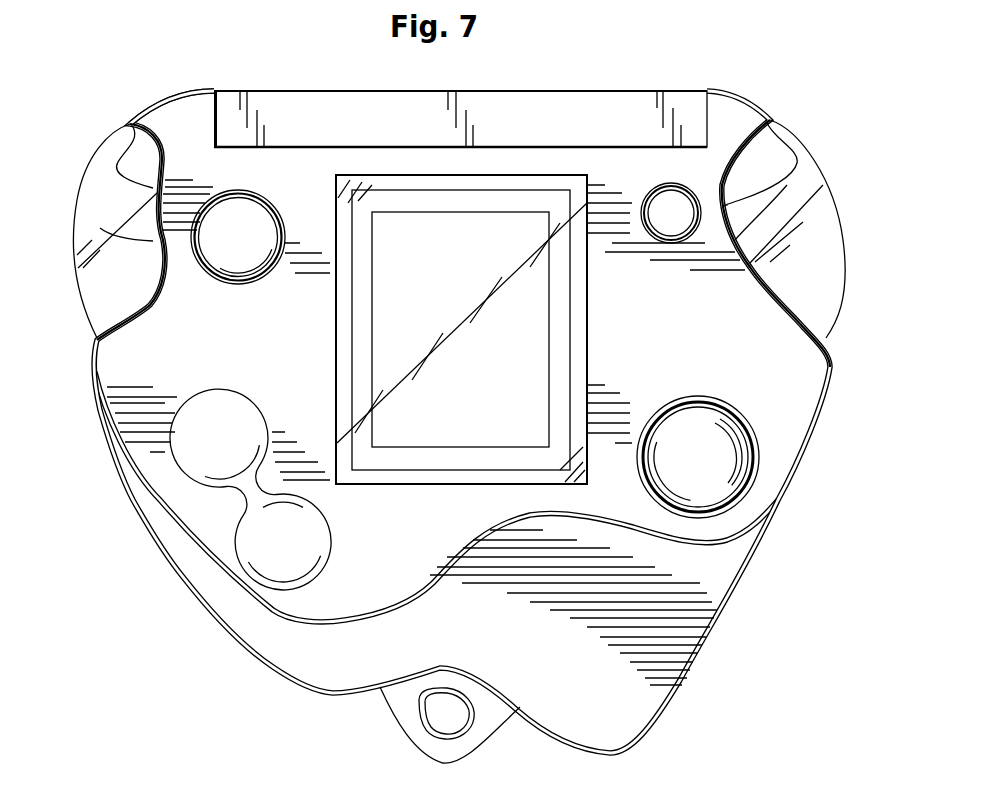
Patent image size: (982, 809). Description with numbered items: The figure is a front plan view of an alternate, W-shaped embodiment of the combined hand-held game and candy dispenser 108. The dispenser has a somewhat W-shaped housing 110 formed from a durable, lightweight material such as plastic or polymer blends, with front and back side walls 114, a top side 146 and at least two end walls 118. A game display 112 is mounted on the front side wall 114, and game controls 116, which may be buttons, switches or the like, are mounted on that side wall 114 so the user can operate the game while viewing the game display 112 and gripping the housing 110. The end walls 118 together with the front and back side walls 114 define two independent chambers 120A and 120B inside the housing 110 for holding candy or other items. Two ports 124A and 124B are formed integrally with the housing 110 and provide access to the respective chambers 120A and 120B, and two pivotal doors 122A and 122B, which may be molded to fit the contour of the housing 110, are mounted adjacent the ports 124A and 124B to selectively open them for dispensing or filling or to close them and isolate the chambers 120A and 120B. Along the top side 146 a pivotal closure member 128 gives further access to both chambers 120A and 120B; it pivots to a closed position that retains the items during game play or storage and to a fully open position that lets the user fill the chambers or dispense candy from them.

The game and candy dispenser 108 is at (297, 90).
The housing 110 is at (794, 90).
The game display 112 is at (417, 423).
The front and back side walls 114 is at (767, 377).
The game controls 116 is at (207, 462).
The end walls 118 is at (93, 371).
The chamber 120A is at (126, 311).
The chamber 120B is at (797, 304).
The pivotal door 122A is at (107, 146).
The pivotal door 122B is at (805, 148).
The port 124A is at (100, 228).
The port 124B is at (787, 185).
The pivotal closure member 128 is at (562, 90).
The top side 146 is at (183, 91).